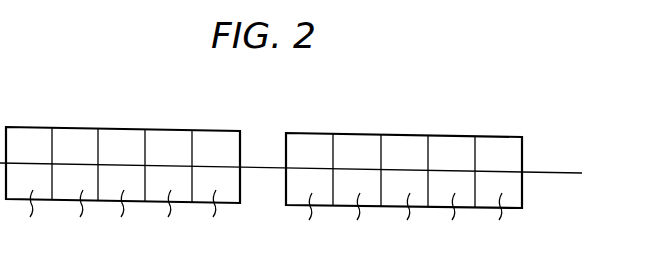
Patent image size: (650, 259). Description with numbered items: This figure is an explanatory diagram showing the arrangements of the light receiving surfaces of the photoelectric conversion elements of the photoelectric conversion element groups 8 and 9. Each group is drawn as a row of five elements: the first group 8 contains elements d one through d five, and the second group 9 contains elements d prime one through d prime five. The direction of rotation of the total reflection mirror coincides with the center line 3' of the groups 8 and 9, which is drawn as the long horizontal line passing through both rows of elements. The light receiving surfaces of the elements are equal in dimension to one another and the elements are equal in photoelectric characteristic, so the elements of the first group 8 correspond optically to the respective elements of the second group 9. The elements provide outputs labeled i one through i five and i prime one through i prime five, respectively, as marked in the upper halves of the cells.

The photoelectric conversion element group 8 is at (167, 130).
The photoelectric conversion element group 9 is at (442, 133).
The center line 3' is at (291, 150).